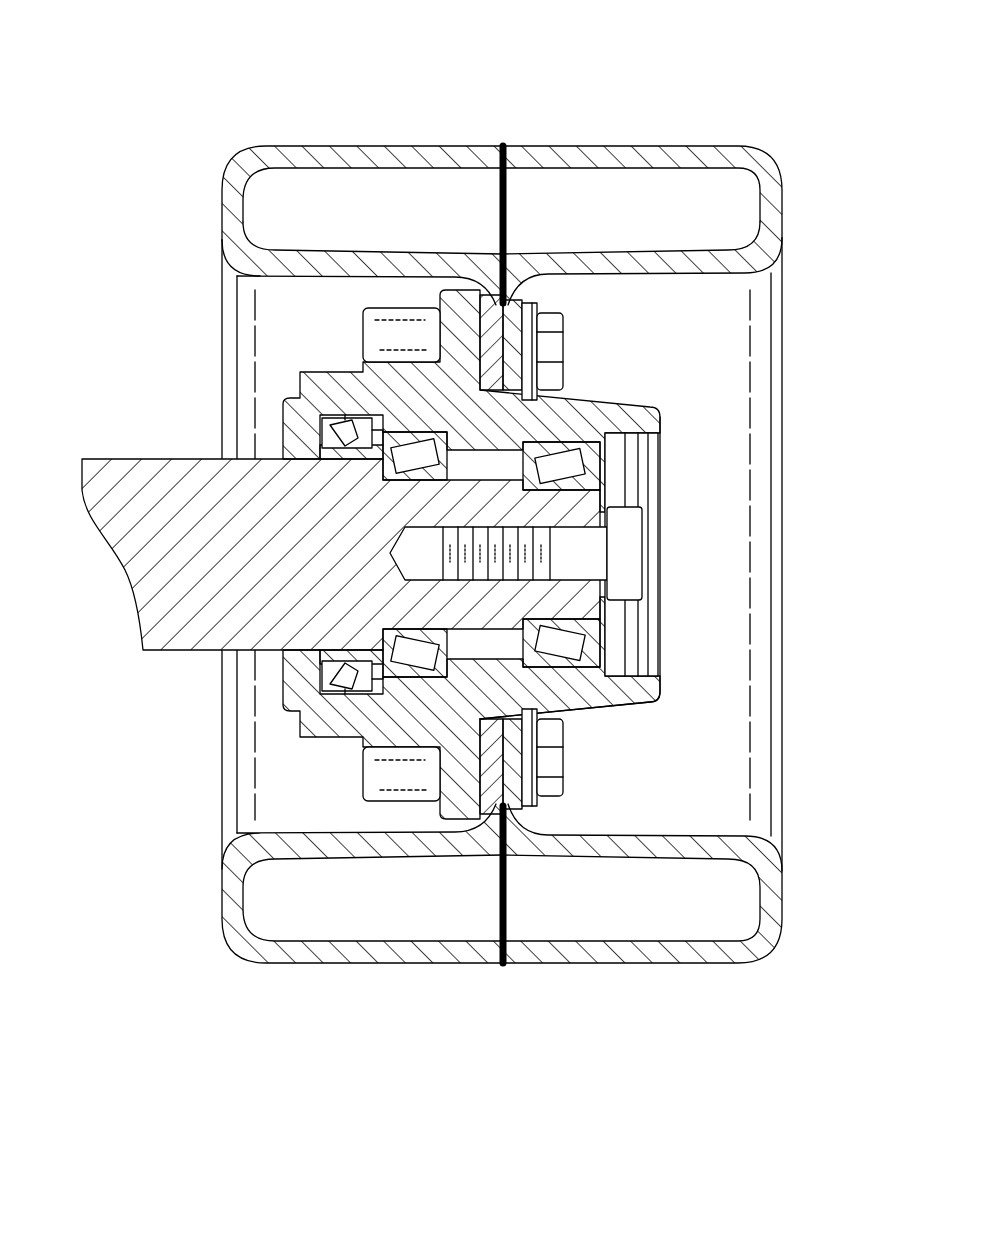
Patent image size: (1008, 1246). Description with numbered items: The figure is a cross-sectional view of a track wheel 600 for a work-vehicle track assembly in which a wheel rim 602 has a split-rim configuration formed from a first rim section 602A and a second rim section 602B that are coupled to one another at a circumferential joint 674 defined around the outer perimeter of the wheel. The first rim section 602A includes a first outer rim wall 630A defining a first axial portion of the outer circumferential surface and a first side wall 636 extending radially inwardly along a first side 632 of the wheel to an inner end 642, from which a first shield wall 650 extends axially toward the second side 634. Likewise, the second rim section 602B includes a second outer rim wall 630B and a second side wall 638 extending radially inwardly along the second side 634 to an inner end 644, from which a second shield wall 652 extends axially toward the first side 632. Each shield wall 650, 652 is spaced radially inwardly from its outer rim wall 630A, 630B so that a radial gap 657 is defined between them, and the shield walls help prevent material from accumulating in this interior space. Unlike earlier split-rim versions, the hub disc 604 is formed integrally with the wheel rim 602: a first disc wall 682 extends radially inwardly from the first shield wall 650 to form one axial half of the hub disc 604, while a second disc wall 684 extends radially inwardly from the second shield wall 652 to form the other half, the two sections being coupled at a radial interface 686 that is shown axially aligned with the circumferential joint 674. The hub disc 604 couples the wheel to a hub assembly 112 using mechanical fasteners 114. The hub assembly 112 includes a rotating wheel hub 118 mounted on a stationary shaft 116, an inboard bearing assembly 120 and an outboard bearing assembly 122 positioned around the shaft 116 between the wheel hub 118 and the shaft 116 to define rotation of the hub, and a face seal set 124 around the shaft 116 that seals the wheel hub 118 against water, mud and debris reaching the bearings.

The track wheel 600 is at (195, 78).
The wheel rim 602 is at (634, 104).
The first rim section 602A is at (362, 976).
The second rim section 602B is at (665, 976).
The first outer rim wall 630A is at (380, 150).
The second outer rim wall 630B is at (670, 150).
The circumferential joint 674 is at (503, 148).
The first side wall 636 is at (236, 195).
The second side wall 638 is at (780, 195).
The first side 632 is at (155, 292).
The second side 634 is at (805, 400).
The inner end of the first side wall 642 is at (240, 258).
The inner end of the second side wall 644 is at (790, 262).
The first shield wall 650 is at (300, 262).
The second shield wall 652 is at (640, 272).
The radial gap 657 is at (643, 229).
The first disc wall 682 is at (492, 343).
The second disc wall 684 is at (515, 370).
The radial interface 686 is at (530, 330).
The mechanical fasteners 114 is at (567, 352).
The hub disc 604 is at (520, 770).
The outboard bearing assembly 122 is at (558, 460).
The face seal set 124 is at (300, 428).
The inboard bearing assembly 120 is at (428, 650).
The wheel hub 118 is at (632, 695).
The hub assembly 112 is at (668, 550).
The stationary shaft 116 is at (152, 458).